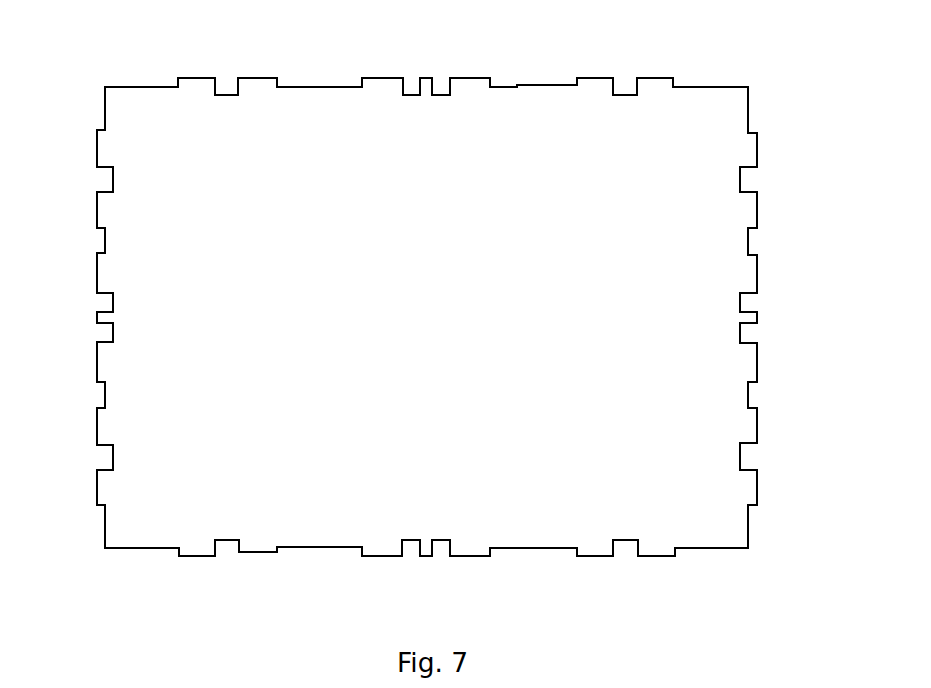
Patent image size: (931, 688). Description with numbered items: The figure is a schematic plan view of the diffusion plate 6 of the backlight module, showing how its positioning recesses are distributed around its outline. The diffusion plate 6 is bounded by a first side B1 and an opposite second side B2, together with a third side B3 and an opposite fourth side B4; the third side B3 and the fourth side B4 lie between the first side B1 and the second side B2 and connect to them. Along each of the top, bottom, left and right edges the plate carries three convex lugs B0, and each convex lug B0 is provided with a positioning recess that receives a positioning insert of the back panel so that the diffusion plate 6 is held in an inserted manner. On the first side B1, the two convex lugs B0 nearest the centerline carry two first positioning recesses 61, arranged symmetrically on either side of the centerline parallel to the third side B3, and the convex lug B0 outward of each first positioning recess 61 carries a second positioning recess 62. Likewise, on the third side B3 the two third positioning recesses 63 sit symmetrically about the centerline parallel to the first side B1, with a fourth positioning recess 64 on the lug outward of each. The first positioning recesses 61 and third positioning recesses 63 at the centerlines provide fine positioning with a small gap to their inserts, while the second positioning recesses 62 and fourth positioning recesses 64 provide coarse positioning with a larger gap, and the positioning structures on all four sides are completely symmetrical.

The diffusion plate 6 is at (695, 190).
The convex lug B0 is at (208, 80).
The first positioning recess 61 is at (420, 78).
The second positioning recess 62 is at (227, 82).
The third positioning recess 63 is at (757, 328).
The fourth positioning recess 64 is at (758, 182).
The first side B1 is at (518, 87).
The second side B2 is at (527, 550).
The third side B3 is at (105, 518).
The fourth side B4 is at (752, 93).